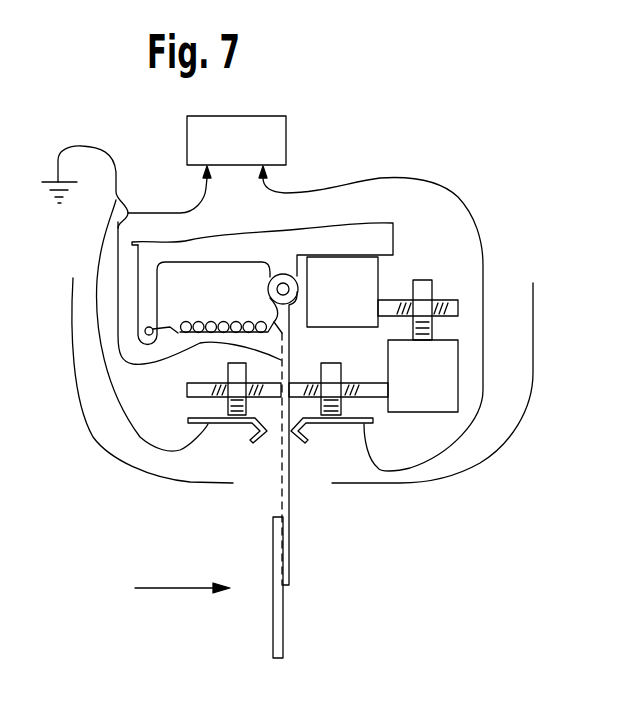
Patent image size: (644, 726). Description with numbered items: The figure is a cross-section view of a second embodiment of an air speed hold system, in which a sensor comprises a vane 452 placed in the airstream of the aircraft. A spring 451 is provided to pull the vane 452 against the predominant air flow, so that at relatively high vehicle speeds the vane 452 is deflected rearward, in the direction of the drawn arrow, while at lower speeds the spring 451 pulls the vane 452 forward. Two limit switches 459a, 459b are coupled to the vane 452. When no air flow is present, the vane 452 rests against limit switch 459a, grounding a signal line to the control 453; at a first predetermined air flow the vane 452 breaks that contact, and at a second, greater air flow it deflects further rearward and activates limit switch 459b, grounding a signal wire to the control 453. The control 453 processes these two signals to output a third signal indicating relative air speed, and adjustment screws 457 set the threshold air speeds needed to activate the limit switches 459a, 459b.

The spring 451 is at (178, 334).
The vane 452 is at (303, 565).
The control 453 is at (286, 130).
The adjustment screws 457 is at (390, 273).
The limit switch 459a is at (222, 424).
The limit switch 459b is at (320, 425).